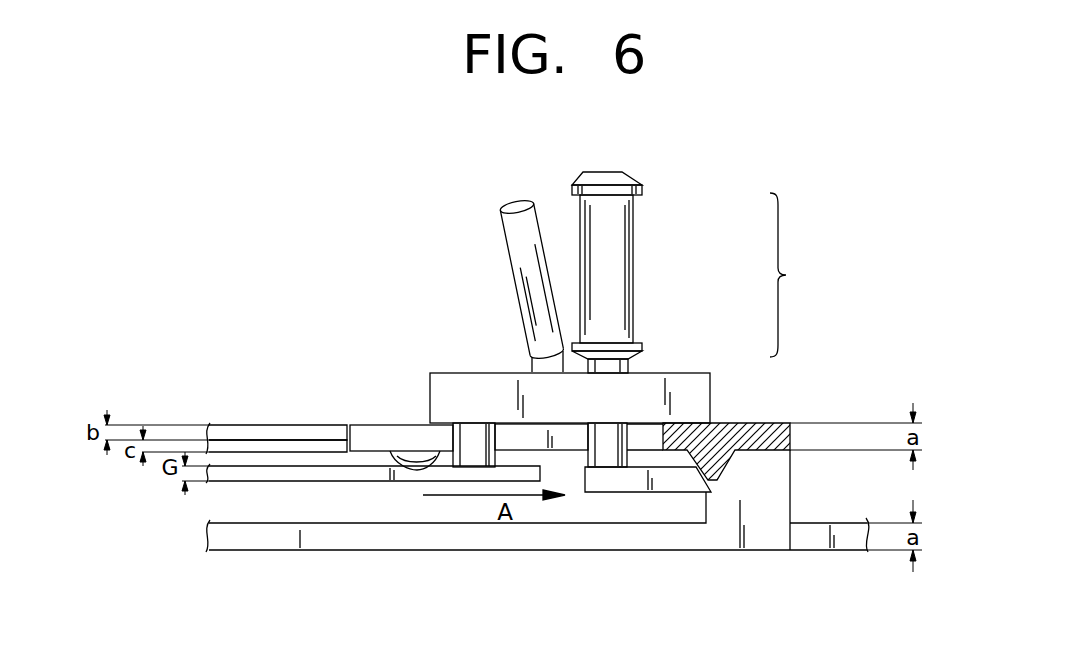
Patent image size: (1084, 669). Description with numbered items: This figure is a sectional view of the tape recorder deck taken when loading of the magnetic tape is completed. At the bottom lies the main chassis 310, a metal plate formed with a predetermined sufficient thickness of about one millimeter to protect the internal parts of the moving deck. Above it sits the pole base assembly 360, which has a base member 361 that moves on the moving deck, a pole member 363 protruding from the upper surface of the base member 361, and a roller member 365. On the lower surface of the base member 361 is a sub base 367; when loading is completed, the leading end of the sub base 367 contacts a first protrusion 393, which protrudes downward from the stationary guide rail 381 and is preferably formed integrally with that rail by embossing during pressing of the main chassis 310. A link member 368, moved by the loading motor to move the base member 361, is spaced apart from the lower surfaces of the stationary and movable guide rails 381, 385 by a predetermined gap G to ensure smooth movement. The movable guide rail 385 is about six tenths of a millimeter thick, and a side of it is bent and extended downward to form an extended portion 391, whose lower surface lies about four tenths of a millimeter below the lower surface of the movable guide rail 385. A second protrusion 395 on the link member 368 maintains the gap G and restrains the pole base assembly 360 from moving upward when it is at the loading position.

The main chassis 310 is at (523, 532).
The pole base assembly 360 is at (803, 275).
The base member 361 is at (655, 385).
The pole member 363 is at (545, 272).
The roller member 365 is at (617, 220).
The sub base 367 is at (677, 480).
The link member 368 is at (328, 475).
The stationary guide rail 381 is at (425, 433).
The movable guide rail 385 is at (248, 432).
The extended portion 391 is at (290, 445).
The first protrusion 393 is at (732, 465).
The second protrusion 395 is at (377, 452).